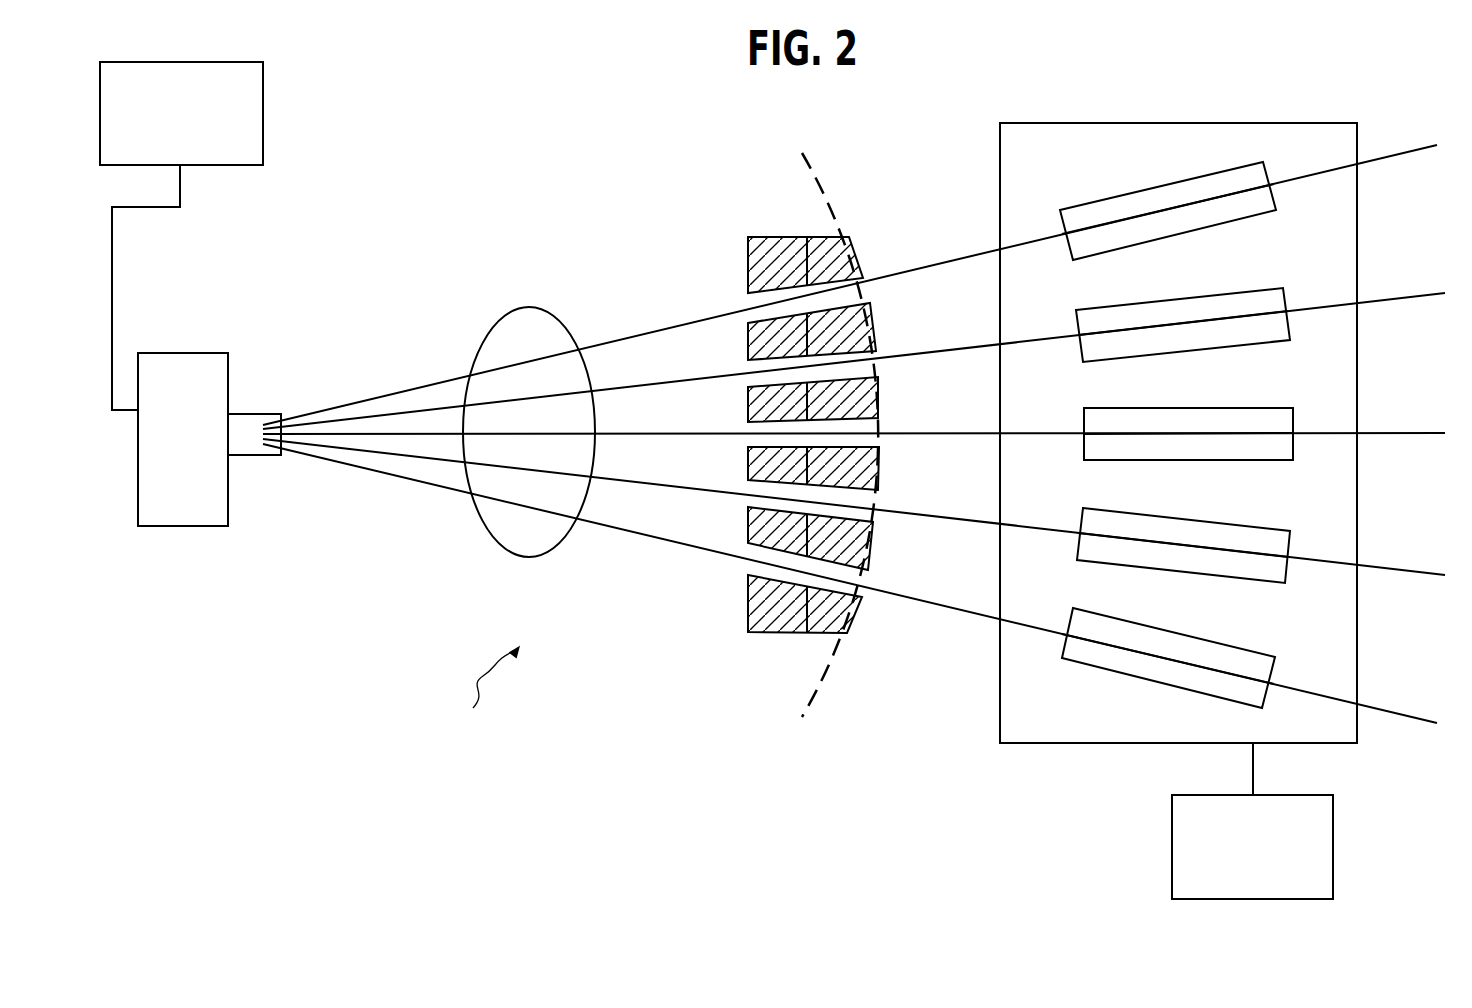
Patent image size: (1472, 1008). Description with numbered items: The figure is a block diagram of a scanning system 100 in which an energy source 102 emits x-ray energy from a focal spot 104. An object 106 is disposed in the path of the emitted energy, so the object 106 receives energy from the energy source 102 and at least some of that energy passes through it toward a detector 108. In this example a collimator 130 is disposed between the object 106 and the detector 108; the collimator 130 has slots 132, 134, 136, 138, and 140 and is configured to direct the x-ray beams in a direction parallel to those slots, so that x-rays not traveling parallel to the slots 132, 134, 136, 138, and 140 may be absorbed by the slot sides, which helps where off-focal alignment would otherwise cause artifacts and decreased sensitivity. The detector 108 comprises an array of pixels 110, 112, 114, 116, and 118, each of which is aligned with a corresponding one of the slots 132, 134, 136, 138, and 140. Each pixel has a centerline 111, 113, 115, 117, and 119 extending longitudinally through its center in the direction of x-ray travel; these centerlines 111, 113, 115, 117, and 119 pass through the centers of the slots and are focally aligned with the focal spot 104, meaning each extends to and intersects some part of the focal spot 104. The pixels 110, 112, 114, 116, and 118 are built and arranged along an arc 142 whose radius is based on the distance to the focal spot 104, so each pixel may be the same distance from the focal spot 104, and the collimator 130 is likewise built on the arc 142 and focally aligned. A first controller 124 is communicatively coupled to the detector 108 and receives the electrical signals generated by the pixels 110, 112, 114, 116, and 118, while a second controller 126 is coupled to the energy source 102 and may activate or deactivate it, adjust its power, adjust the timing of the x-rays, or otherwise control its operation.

The system 100 is at (477, 688).
The energy source 102 is at (182, 352).
The focal spot 104 is at (250, 413).
The object 106 is at (550, 312).
The detector 108 is at (1357, 138).
The pixel 110 is at (1267, 172).
The centerline 111 is at (1123, 218).
The pixel 112 is at (1290, 295).
The centerline 113 is at (1243, 317).
The pixel 114 is at (1293, 422).
The centerline 115 is at (1243, 430).
The pixel 116 is at (1290, 547).
The centerline 117 is at (1237, 550).
The pixel 118 is at (1273, 673).
The centerline 119 is at (1217, 670).
The first controller 124 is at (1236, 886).
The second controller 126 is at (164, 148).
The collimator 130 is at (854, 404).
The slot 132 is at (850, 297).
The slot 134 is at (858, 368).
The slot 136 is at (860, 425).
The slot 138 is at (863, 500).
The slot 140 is at (853, 575).
The arc 142 is at (830, 675).